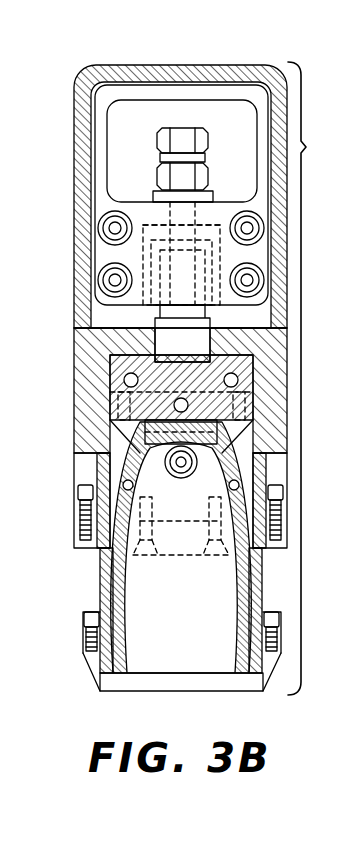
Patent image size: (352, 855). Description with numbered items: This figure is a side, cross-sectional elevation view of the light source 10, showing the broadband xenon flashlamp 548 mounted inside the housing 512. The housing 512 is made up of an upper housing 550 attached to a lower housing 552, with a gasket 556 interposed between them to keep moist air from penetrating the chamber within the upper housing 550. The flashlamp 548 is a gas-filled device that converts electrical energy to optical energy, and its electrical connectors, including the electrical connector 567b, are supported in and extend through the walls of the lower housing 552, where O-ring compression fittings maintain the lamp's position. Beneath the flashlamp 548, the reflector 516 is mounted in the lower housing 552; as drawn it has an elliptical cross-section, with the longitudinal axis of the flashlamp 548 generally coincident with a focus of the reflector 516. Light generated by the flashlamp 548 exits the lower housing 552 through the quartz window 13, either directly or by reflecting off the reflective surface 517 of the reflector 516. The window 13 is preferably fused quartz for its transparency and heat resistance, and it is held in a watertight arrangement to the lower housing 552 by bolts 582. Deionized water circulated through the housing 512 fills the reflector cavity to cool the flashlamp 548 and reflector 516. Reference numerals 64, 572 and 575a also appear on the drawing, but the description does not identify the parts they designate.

The light source 10 is at (64, 120).
The housing 512 is at (317, 378).
The upper housing 550 is at (76, 212).
The gasket 556 is at (76, 328).
The lower housing 552 is at (75, 392).
The broadband xenon flashlamp 548 is at (168, 471).
The reflector 516 is at (124, 592).
The reflective surface 517 is at (120, 613).
The cavity 64 is at (181, 561).
The quartz window 13 is at (148, 692).
The bolts 582 is at (92, 612).
The bolt 572 is at (215, 489).
The electrical connector 567b is at (213, 500).
The lower bolt 575a is at (307, 601).